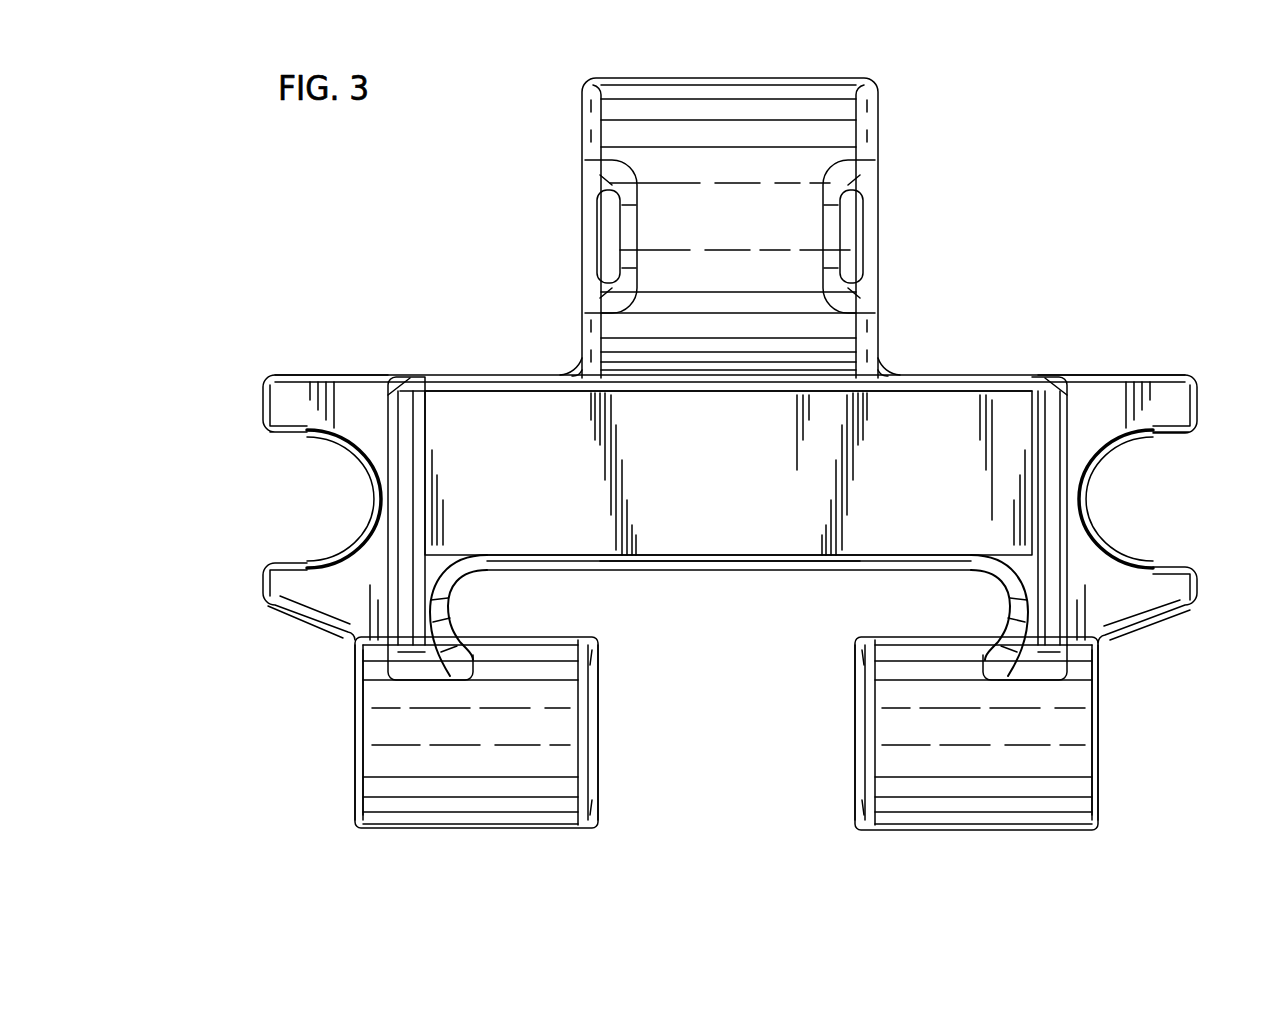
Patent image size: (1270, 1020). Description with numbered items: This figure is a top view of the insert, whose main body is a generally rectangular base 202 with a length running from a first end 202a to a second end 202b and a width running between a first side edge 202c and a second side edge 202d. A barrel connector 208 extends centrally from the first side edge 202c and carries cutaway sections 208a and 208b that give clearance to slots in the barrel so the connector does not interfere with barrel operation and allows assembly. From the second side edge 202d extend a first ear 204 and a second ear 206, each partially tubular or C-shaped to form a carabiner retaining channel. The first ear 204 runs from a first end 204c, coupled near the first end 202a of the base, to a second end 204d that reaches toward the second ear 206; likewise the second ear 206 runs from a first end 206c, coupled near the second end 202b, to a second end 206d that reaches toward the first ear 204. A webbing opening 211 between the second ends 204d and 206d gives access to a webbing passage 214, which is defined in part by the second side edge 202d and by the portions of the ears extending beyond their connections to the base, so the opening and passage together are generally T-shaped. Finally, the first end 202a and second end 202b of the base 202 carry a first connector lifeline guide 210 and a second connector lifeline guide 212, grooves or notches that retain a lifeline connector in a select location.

The base 202 is at (900, 412).
The first end of the base 202a is at (288, 390).
The second end of the base 202b is at (1153, 393).
The first side edge 202c is at (1020, 375).
The second side edge 202d is at (678, 573).
The first ear 204 is at (553, 803).
The first end of the first ear 204c is at (357, 765).
The second end of the first ear 204d is at (603, 722).
The second ear 206 is at (998, 810).
The first end of the second ear 206c is at (1095, 727).
The second end of the second ear 206d is at (857, 733).
The barrel connector 208 is at (832, 100).
The cutaway section 208a is at (603, 218).
The cutaway section 208b is at (858, 235).
The first connector lifeline guide 210 is at (302, 494).
The webbing opening 211 is at (737, 783).
The second connector lifeline guide 212 is at (1138, 510).
The webbing passage 214 is at (785, 588).